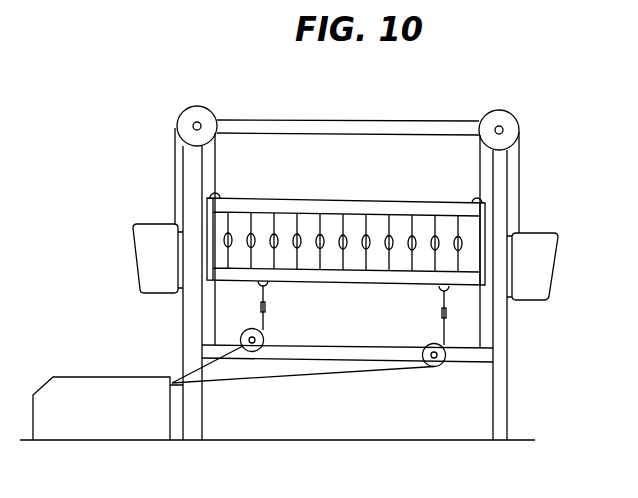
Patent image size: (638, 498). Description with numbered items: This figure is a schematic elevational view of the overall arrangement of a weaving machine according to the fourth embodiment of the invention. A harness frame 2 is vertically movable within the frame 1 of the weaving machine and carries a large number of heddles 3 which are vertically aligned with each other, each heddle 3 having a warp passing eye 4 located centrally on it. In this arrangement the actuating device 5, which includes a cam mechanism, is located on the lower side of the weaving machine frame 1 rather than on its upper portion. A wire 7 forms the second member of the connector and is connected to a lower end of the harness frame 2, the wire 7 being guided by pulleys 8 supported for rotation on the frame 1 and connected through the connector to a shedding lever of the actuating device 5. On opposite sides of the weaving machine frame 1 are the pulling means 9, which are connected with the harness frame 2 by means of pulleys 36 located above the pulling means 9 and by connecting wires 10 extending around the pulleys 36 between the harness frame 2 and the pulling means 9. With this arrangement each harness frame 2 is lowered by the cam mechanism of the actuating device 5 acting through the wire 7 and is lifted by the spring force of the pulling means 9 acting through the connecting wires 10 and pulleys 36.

The frame 1 is at (506, 338).
The harness frame 2 is at (353, 212).
The heddles 3 is at (298, 247).
The warp passing eye 4 is at (320, 236).
The actuating device 5 is at (101, 395).
The wire 7 is at (223, 365).
The pulleys 8 is at (260, 352).
The pulling means 9 is at (148, 268).
The connecting wires 10 is at (216, 160).
The pulleys 36 is at (198, 111).